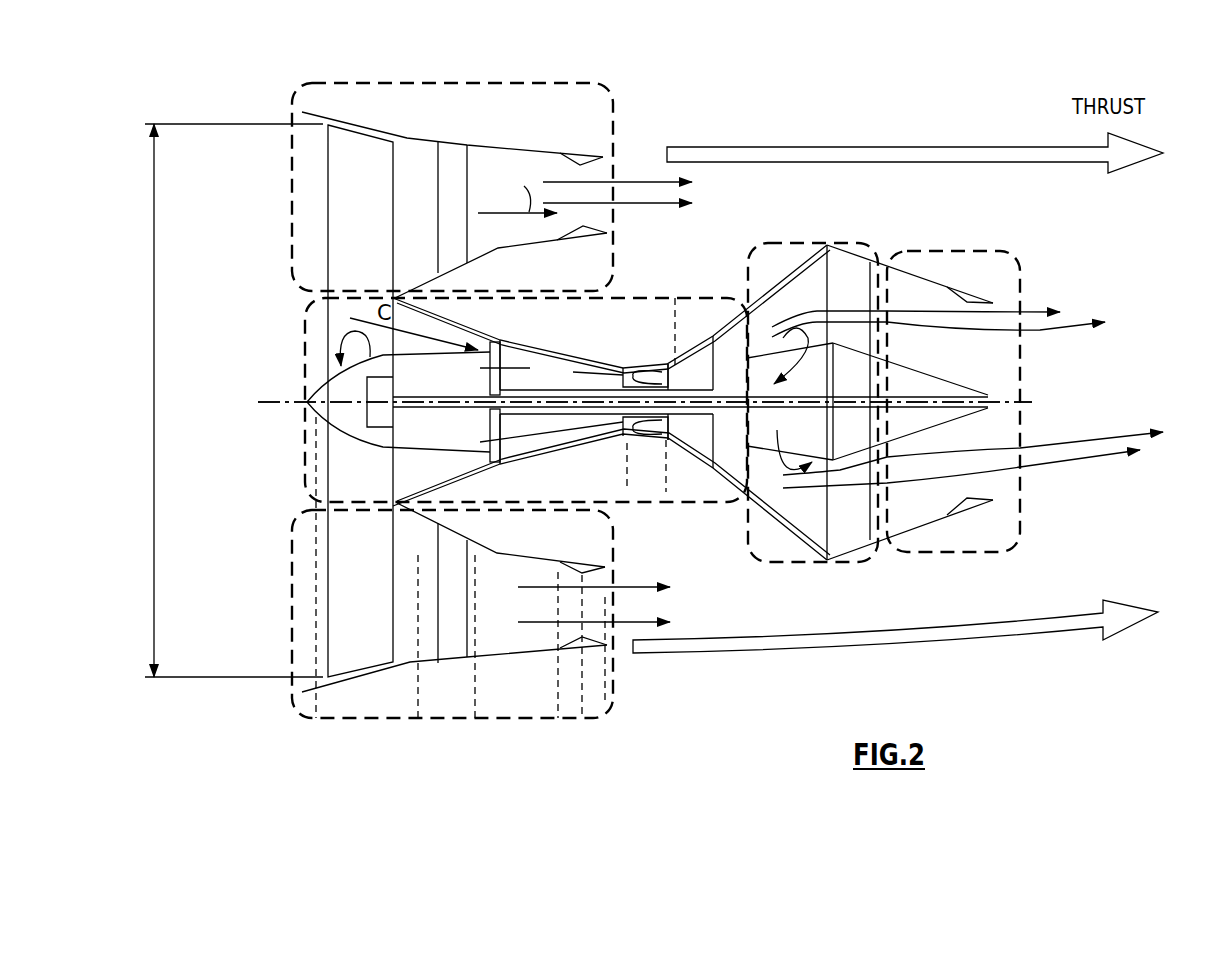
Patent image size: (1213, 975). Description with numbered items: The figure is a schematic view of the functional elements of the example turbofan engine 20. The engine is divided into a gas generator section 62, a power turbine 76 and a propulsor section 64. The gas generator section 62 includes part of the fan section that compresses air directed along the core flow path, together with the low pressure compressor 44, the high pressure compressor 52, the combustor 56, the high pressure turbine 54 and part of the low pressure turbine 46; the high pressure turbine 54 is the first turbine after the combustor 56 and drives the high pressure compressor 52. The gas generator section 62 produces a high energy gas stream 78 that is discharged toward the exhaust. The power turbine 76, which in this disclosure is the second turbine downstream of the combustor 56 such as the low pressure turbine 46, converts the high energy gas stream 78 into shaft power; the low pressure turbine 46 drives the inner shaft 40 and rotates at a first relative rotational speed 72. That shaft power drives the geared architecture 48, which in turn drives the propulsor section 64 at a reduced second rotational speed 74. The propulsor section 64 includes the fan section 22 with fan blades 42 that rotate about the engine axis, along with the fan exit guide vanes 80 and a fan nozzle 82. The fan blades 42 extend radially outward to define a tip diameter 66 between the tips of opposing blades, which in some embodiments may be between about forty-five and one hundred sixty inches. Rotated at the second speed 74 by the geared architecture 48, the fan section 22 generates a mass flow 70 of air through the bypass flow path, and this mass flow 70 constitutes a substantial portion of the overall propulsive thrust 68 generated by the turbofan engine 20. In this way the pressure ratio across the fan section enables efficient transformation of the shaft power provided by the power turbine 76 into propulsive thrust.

The turbofan engine 20 is at (878, 74).
The fan section 22 is at (367, 124).
The inner shaft 40 is at (462, 398).
The fan blades 42 is at (360, 401).
The low pressure compressor 44 is at (440, 455).
The low pressure turbine 46 is at (781, 490).
The geared architecture 48 is at (380, 410).
The high pressure compressor 52 is at (553, 422).
The high pressure turbine 54 is at (693, 443).
The combustor 56 is at (645, 375).
The gas generator section 62 is at (697, 487).
The propulsor section 64 is at (343, 695).
The tip diameter 66 is at (156, 297).
The propulsive thrust 68 is at (895, 147).
The mass flow 70 is at (641, 180).
The first relative rotational speed 72 is at (796, 325).
The second rotational speed 74 is at (340, 340).
The power turbine 76 is at (760, 262).
The high energy gas stream 78 is at (923, 334).
The fan exit guide vanes 80 is at (457, 188).
The fan nozzle 82 is at (594, 140).